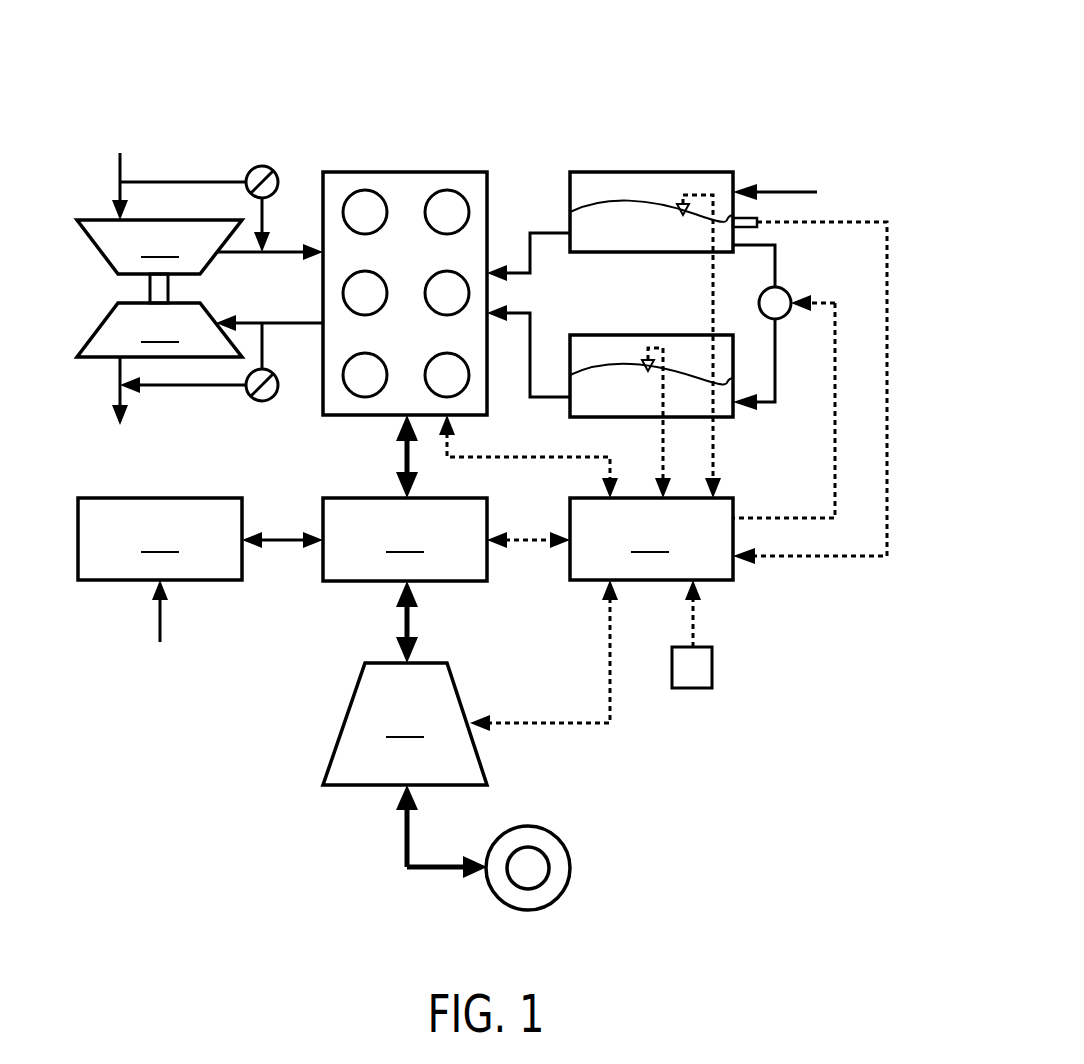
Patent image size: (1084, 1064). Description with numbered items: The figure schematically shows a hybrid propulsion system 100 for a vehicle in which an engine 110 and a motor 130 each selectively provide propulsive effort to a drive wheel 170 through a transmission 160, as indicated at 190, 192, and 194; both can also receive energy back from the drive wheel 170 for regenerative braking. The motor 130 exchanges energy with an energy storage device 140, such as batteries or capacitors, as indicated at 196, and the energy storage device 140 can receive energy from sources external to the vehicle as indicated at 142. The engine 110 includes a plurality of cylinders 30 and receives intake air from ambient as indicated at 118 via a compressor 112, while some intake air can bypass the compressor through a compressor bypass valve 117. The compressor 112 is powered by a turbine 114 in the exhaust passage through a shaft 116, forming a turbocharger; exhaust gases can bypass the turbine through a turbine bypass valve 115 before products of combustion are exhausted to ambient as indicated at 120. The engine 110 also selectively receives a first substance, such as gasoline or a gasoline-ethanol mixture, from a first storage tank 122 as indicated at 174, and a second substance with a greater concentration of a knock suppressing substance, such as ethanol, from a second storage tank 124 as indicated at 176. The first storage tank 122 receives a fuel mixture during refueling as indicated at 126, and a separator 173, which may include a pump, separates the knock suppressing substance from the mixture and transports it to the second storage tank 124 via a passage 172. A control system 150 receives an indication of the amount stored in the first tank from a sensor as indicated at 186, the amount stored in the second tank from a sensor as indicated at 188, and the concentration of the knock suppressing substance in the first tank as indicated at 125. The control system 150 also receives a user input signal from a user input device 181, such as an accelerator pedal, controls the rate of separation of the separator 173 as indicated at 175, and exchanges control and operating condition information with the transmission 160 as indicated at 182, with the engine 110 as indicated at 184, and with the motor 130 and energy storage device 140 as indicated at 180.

The hybrid propulsion system 100 is at (770, 124).
The engine 110 is at (343, 172).
The cylinders 30 is at (360, 375).
The compressor 112 is at (200, 247).
The turbine 114 is at (200, 330).
The shaft 116 is at (160, 289).
The compressor bypass valve 117 is at (268, 167).
The turbine bypass valve 115 is at (258, 401).
The intake air from ambient 118 is at (174, 172).
The exhaust to ambient 120 is at (120, 407).
The first storage tank 122 is at (590, 172).
The second storage tank 124 is at (590, 335).
The concentration indication 125 is at (890, 470).
The fuel mixture input 126 is at (798, 193).
The passage 172 is at (776, 340).
The separator 173 is at (787, 290).
The first substance delivery 174 is at (525, 235).
The separator control path 175 is at (835, 312).
The second substance delivery 176 is at (527, 399).
The first tank level sensor 186 is at (718, 443).
The second tank level sensor 188 is at (661, 440).
The motor 130 is at (405, 539).
The energy storage device 140 is at (160, 539).
The external energy input 142 is at (160, 626).
The control system 150 is at (651, 539).
The transmission 160 is at (405, 724).
The drive wheel 170 is at (528, 826).
The motor/energy storage communication link 180 is at (528, 550).
The user input device 181 is at (712, 668).
The transmission communication link 182 is at (607, 663).
The engine communication link 184 is at (528, 461).
The engine-transmission coupling 190 is at (402, 457).
The motor-transmission coupling 192 is at (402, 619).
The transmission-wheel coupling 194 is at (404, 840).
The motor-energy storage link 196 is at (283, 550).